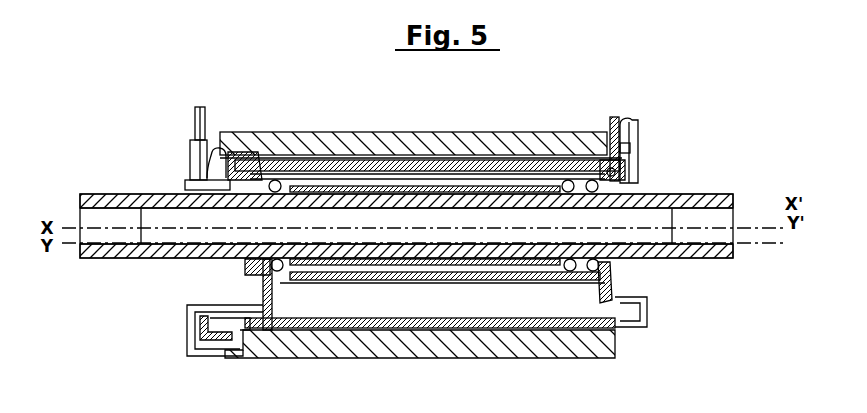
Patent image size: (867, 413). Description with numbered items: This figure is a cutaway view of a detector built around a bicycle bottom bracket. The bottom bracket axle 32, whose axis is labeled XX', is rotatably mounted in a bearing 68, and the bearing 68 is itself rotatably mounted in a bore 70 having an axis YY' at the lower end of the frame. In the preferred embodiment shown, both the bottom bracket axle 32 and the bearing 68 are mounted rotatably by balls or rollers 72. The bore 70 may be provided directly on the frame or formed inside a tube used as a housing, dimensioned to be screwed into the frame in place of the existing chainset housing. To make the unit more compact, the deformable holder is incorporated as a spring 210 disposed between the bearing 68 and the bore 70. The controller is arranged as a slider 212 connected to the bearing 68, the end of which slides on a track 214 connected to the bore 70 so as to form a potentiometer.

The bottom bracket axle 32 is at (128, 258).
The bearing 68 is at (262, 282).
The bore 70 is at (333, 346).
The balls or rollers 72 is at (276, 178).
The spring 210 is at (187, 160).
The slider 212 is at (642, 141).
The track 214 is at (613, 117).